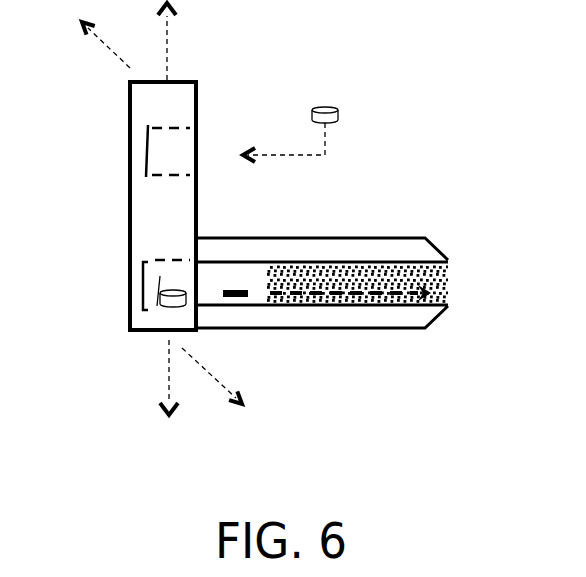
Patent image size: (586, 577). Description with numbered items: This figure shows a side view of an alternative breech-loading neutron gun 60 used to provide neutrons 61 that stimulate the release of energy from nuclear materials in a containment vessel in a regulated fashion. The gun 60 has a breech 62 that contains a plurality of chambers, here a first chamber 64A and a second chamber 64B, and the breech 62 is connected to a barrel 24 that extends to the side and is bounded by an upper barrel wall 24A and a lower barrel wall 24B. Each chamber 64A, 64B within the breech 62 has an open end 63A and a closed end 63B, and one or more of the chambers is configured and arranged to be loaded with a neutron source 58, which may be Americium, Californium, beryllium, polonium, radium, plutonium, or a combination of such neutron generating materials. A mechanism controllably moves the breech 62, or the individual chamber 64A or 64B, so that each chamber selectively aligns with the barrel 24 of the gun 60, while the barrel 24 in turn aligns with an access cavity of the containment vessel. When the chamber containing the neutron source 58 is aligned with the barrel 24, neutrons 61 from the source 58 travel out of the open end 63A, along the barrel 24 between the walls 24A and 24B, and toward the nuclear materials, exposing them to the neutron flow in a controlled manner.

The breech-loading neutron gun 60 is at (298, 467).
The breech 62 is at (177, 233).
The open end 63A is at (183, 160).
The chamber 64A is at (182, 137).
The closed end 63B is at (143, 158).
The chamber 64B is at (160, 276).
The neutron source 58 is at (340, 113).
The barrel 24 is at (367, 283).
The barrel wall 24A is at (277, 247).
The barrel wall 24B is at (300, 318).
The neutrons 61 is at (357, 262).